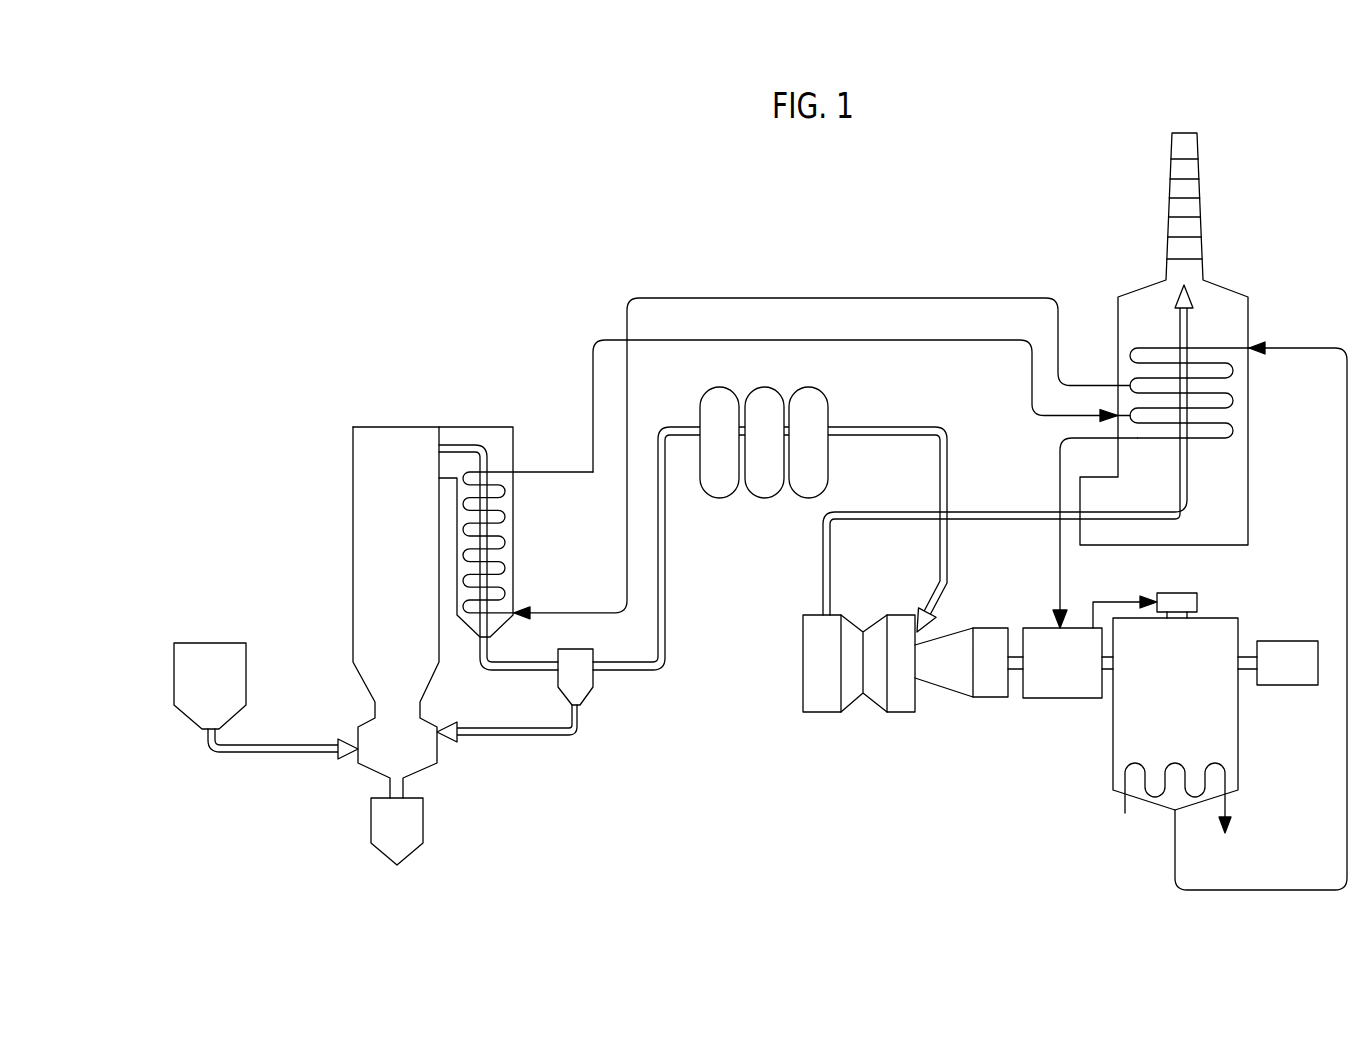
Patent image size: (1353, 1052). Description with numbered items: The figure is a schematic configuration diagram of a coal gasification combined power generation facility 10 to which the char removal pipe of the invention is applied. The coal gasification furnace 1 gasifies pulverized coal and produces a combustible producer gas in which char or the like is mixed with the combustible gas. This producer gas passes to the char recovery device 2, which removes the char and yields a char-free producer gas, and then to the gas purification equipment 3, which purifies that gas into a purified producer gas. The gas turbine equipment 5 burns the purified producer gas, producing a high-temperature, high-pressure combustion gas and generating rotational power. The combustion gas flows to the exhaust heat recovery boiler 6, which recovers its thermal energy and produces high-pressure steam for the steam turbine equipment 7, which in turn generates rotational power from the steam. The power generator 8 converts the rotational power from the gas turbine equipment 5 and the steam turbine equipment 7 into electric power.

The coal gasification combined power generation facility 10 is at (219, 410).
The coal gasification furnace 1 is at (402, 425).
The char recovery device 2 is at (595, 683).
The gas purification equipment 3 is at (828, 405).
The gas turbine equipment 5 is at (803, 655).
The exhaust heat recovery boiler 6 is at (1228, 285).
The steam turbine equipment 7 is at (1215, 637).
The power generator 8 is at (1288, 685).